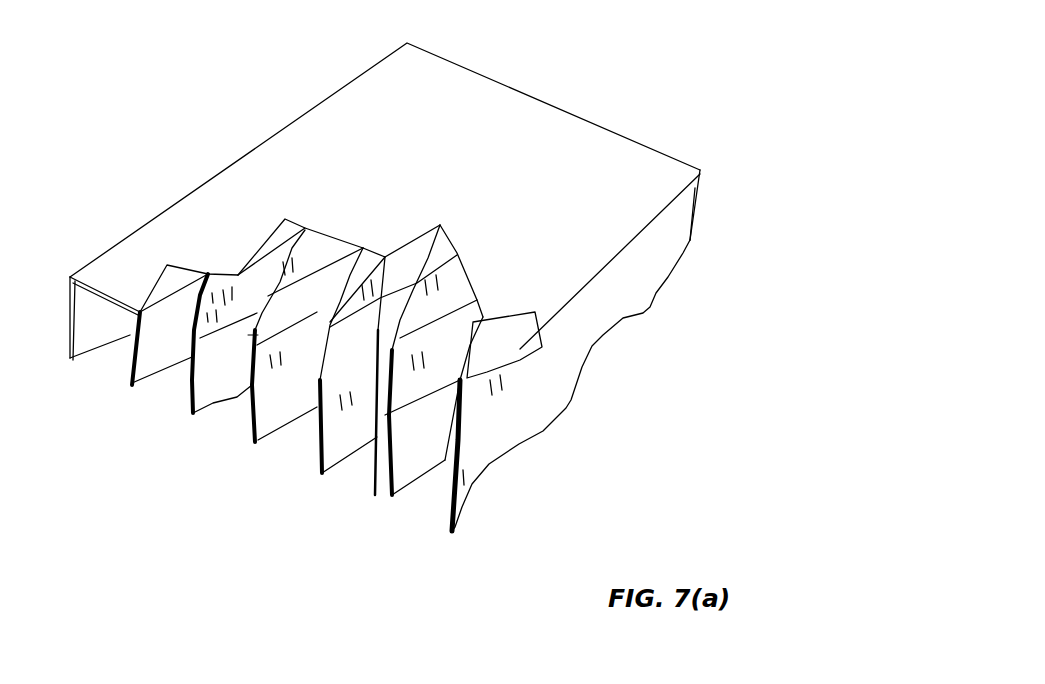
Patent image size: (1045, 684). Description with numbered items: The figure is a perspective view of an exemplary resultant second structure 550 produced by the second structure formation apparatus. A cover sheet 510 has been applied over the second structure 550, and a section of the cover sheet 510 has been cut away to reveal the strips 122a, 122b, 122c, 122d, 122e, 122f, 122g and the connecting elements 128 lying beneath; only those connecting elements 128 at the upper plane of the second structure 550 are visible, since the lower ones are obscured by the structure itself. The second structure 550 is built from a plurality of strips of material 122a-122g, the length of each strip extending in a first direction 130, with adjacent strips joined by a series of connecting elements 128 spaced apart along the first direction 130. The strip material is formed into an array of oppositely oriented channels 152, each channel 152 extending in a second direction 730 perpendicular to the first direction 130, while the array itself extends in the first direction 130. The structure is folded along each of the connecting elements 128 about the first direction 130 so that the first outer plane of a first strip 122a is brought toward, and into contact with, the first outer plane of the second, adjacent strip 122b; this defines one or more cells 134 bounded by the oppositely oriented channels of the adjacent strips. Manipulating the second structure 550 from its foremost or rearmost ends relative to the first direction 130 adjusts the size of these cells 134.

The cover sheet 510 is at (305, 173).
The second structure 550 is at (652, 96).
The first direction 130 is at (735, 284).
The oppositely oriented channels 152 is at (425, 352).
The second direction 730 is at (765, 204).
The connecting elements 128 is at (462, 385).
The cells 134 is at (405, 379).
The first strip 122a is at (452, 533).
The second, adjacent strip 122b is at (427, 448).
The strip of material 122c is at (375, 440).
The strip of material 122d is at (337, 450).
The strip of material 122e is at (308, 450).
The strip of material 122f is at (265, 425).
The strip of material 122g is at (255, 403).